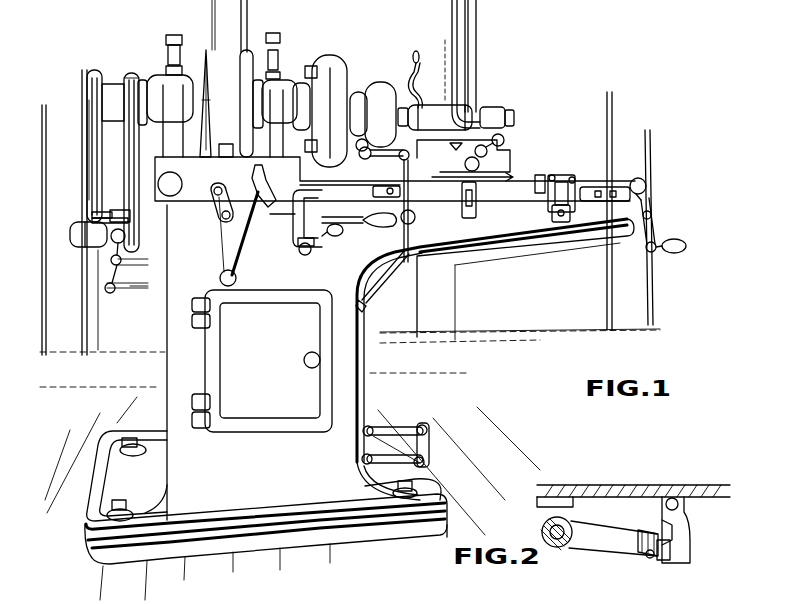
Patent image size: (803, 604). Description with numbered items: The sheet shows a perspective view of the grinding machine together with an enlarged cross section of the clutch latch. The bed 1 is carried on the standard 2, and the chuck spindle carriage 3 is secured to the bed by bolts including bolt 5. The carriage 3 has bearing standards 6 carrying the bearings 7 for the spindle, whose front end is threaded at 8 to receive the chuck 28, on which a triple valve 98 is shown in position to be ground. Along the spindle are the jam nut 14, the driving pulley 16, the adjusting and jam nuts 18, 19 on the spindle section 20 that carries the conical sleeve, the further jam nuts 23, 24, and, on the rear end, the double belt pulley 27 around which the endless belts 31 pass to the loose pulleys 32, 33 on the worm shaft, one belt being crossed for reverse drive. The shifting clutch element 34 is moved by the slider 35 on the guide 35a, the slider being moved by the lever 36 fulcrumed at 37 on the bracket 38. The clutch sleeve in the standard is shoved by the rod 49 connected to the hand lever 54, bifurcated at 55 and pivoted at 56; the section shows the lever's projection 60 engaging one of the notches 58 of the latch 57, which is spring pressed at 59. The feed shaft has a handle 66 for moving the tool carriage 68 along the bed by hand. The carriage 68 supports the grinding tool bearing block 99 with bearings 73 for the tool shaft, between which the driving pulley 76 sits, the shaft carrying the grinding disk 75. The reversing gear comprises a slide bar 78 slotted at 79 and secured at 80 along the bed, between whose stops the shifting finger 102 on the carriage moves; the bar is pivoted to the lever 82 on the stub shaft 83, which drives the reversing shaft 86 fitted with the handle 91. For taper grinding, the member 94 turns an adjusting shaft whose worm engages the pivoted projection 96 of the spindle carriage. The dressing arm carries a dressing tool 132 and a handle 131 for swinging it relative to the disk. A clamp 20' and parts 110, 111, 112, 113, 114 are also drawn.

In FIG. 1, the bed 1 is at (496, 228).
In FIG. 2, the bed 1 is at (617, 495).
In FIG. 1, the standard 2 is at (410, 172).
In FIG. 1, the chuck spindle carriage 3 is at (160, 167).
In FIG. 1, the bolt 5 is at (226, 140).
In FIG. 1, the bearing standards 6 is at (170, 132).
In FIG. 1, the bearings 7 is at (166, 62).
In FIG. 1, the threaded end of spindle 8 is at (590, 186).
In FIG. 1, the jam nut 14 is at (295, 225).
In FIG. 1, the driving pulley 16 is at (207, 63).
In FIG. 1, the adjusting and jam nut 18 is at (210, 82).
In FIG. 1, the adjusting and jam nut 19 is at (211, 100).
In FIG. 1, the spindle section 20 is at (556, 216).
In FIG. 1, the clamp plate 20' is at (559, 179).
In FIG. 1, the jam nut 23 is at (140, 85).
In FIG. 1, the jam nut 24 is at (134, 74).
In FIG. 1, the double belt pulley 27 is at (100, 78).
In FIG. 1, the chuck 28 is at (325, 60).
In FIG. 1, the endless belts 31 is at (95, 140).
In FIG. 1, the loose belt pulley 32 is at (92, 219).
In FIG. 1, the loose belt pulley 33 is at (125, 210).
In FIG. 1, the shifting clutch element 34 is at (95, 212).
In FIG. 1, the slider 35 is at (110, 240).
In FIG. 1, the guide 35a is at (72, 234).
In FIG. 1, the lever 36 is at (106, 290).
In FIG. 1, the fulcrum 37 is at (111, 263).
In FIG. 1, the bracket 38 is at (113, 276).
In FIG. 1, the rod 49 is at (294, 208).
In FIG. 1, the hand lever 54 is at (370, 216).
In FIG. 2, the hand lever 54 is at (642, 554).
In FIG. 1, the bifurcation 55 is at (312, 252).
In FIG. 2, the bifurcation 55 is at (590, 541).
In FIG. 1, the pivot 56 is at (301, 252).
In FIG. 2, the pivot 56 is at (546, 524).
In FIG. 1, the latch 57 is at (341, 236).
In FIG. 2, the latch 57 is at (688, 543).
In FIG. 2, the notches 58 is at (676, 522).
In FIG. 2, the spring 59 is at (680, 506).
In FIG. 2, the projection 60 is at (660, 562).
In FIG. 1, the handle 66 is at (658, 238).
In FIG. 1, the tool slide or carriage 68 is at (516, 155).
In FIG. 1, the bearings 73 is at (505, 112).
In FIG. 1, the grinding disk 75 is at (441, 105).
In FIG. 1, the driving pulley 76 is at (498, 107).
In FIG. 1, the slide bar 78 is at (528, 174).
In FIG. 1, the slots 79 is at (252, 182).
In FIG. 1, the securing points 80 is at (600, 186).
In FIG. 1, the lever 82 is at (213, 212).
In FIG. 1, the stub shaft 83 is at (221, 240).
In FIG. 1, the reversing shaft 86 is at (220, 278).
In FIG. 1, the handle 91 is at (247, 250).
In FIG. 1, the member 94 is at (176, 196).
In FIG. 1, the pivoted projection 96 is at (130, 288).
In FIG. 1, the triple valve 98 is at (380, 84).
In FIG. 1, the grinding tool bearing block 99 is at (506, 135).
In FIG. 1, the shifting finger 102 is at (560, 172).
In FIG. 1, the bracket 110 is at (437, 157).
In FIG. 1, the lever 111 is at (362, 157).
In FIG. 1, the rod 112 is at (380, 282).
In FIG. 1, the nut 113 is at (414, 221).
In FIG. 1, the rod foot 114 is at (345, 312).
In FIG. 1, the handle 131 is at (419, 55).
In FIG. 1, the dressing tool 132 is at (420, 76).